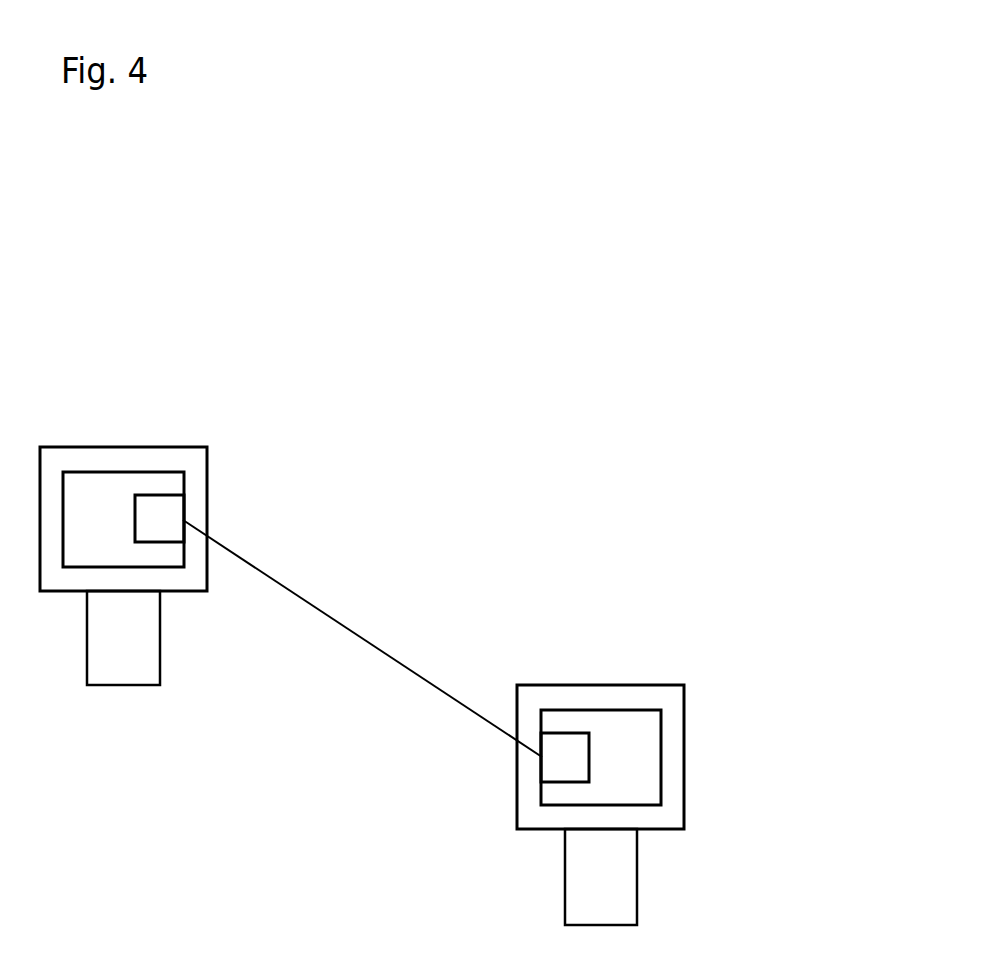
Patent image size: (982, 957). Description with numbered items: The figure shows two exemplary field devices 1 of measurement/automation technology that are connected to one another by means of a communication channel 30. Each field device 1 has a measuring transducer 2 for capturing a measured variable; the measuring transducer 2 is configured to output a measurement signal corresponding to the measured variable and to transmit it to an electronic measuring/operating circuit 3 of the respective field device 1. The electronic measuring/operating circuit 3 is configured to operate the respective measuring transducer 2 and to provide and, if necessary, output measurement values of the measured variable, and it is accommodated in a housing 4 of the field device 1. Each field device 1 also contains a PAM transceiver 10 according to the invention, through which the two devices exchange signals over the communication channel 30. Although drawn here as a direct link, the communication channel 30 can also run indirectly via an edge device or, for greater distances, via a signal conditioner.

The field device 1 is at (437, 608).
The measuring transducer 2 is at (162, 662).
The electronic measuring/operating circuit 3 is at (112, 470).
The housing 4 is at (208, 493).
The PAM transceiver 10 is at (160, 519).
The communication channel 30 is at (365, 622).